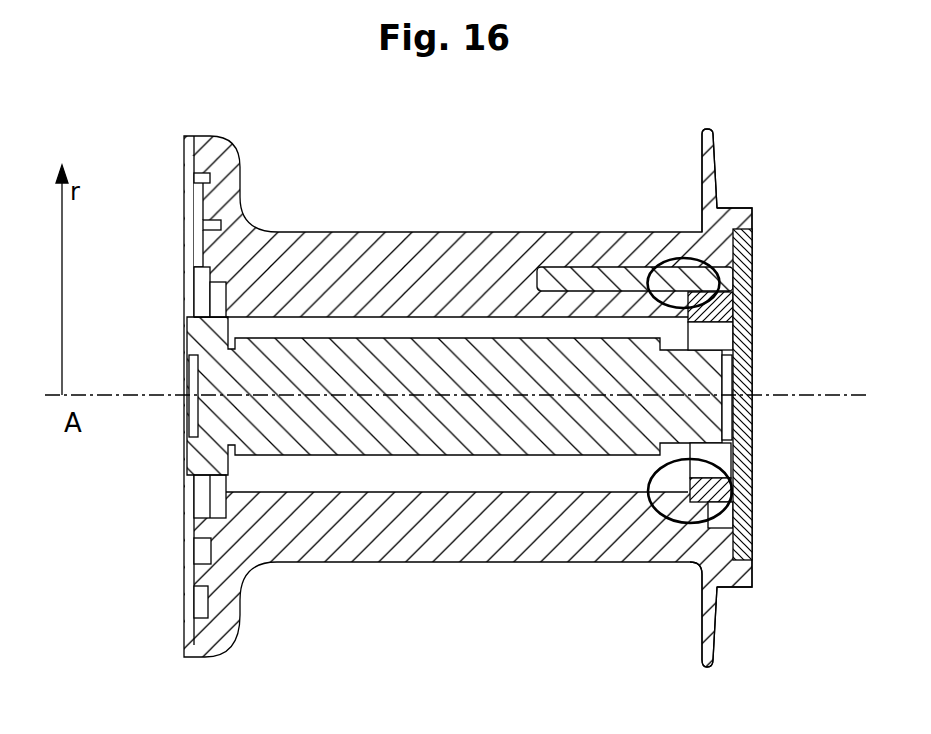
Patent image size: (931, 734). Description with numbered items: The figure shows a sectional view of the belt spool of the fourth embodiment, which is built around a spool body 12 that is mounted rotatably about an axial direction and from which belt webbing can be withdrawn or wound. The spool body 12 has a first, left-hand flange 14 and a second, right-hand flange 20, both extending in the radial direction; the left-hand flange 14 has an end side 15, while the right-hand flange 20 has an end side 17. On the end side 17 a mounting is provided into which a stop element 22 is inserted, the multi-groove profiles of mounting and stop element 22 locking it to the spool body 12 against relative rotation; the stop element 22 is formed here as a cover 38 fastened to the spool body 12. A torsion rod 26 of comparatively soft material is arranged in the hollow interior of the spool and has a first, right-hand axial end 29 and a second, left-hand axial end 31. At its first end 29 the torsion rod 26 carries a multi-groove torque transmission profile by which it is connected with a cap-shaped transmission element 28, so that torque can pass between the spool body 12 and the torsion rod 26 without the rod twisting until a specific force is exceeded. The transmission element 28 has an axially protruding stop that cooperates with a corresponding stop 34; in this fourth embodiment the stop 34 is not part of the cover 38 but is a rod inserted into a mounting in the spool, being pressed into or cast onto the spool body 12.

The spool body 12 is at (400, 249).
The first, left-hand flange 14 is at (196, 637).
The end side 15 is at (196, 534).
The end side 17 is at (733, 242).
The second, right-hand flange 20 is at (700, 620).
The stop element 22 is at (585, 270).
The torsion rod 26 is at (413, 443).
The transmission element 28 is at (752, 305).
The first, right-hand axial end 29 is at (750, 455).
The second, left-hand axial end 31 is at (188, 349).
The stop 34 is at (752, 266).
The cover 38 is at (752, 430).